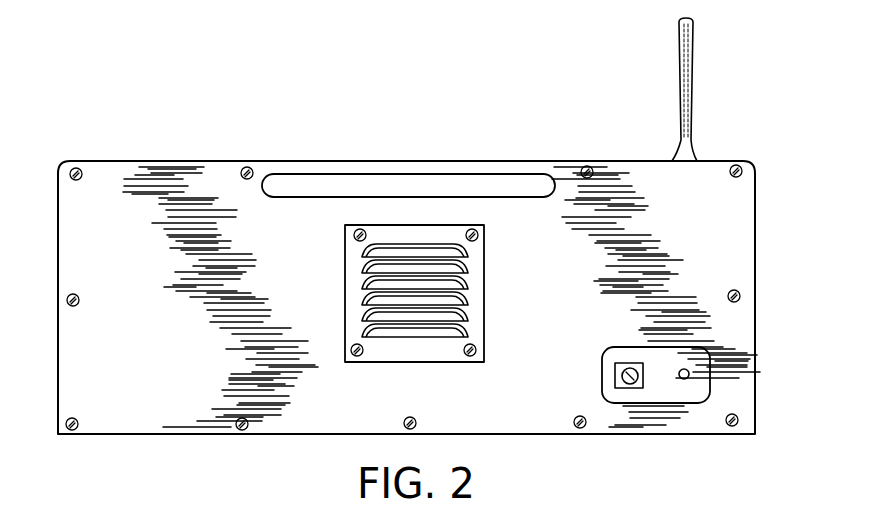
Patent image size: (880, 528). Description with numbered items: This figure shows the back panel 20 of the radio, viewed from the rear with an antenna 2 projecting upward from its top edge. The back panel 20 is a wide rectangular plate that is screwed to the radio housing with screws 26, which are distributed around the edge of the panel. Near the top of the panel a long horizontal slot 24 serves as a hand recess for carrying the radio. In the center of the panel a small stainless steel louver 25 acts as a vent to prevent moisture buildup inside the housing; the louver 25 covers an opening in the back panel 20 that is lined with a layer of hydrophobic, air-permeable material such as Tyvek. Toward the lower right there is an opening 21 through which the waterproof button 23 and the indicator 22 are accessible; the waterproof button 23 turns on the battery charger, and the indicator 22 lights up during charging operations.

The antenna 2 is at (691, 97).
The back panel 20 is at (738, 213).
The opening 21 is at (696, 358).
The indicator 22 is at (690, 373).
The waterproof button 23 is at (638, 390).
The slot 24 is at (515, 183).
The louver 25 is at (380, 235).
The screws 26 is at (82, 173).